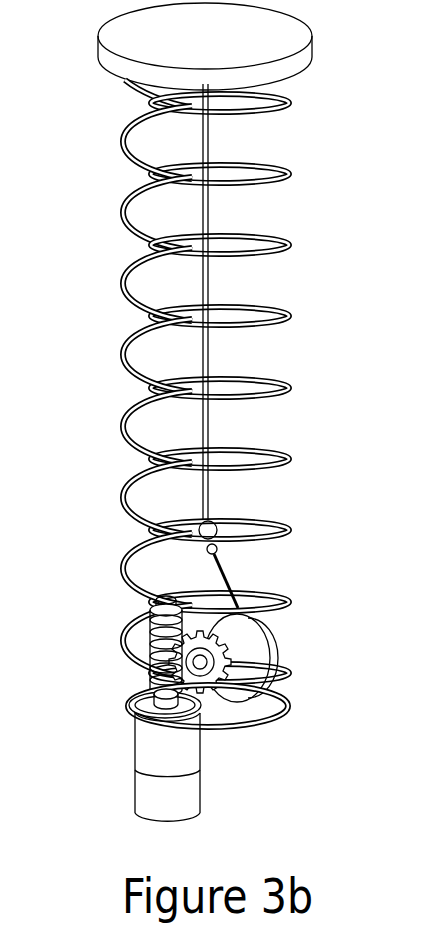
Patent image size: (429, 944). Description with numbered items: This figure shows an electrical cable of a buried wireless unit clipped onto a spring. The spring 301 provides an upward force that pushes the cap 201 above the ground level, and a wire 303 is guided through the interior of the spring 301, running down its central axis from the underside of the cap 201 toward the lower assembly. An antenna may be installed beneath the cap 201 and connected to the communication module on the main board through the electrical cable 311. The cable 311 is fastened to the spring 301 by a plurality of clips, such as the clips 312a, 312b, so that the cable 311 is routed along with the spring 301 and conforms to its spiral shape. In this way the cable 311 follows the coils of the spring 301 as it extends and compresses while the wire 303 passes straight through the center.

The cap 201 is at (305, 85).
The electrical cable 311 is at (205, 381).
The clip 312a is at (262, 162).
The clip 312b is at (136, 252).
The spring 301 is at (204, 412).
The wire 303 is at (215, 432).